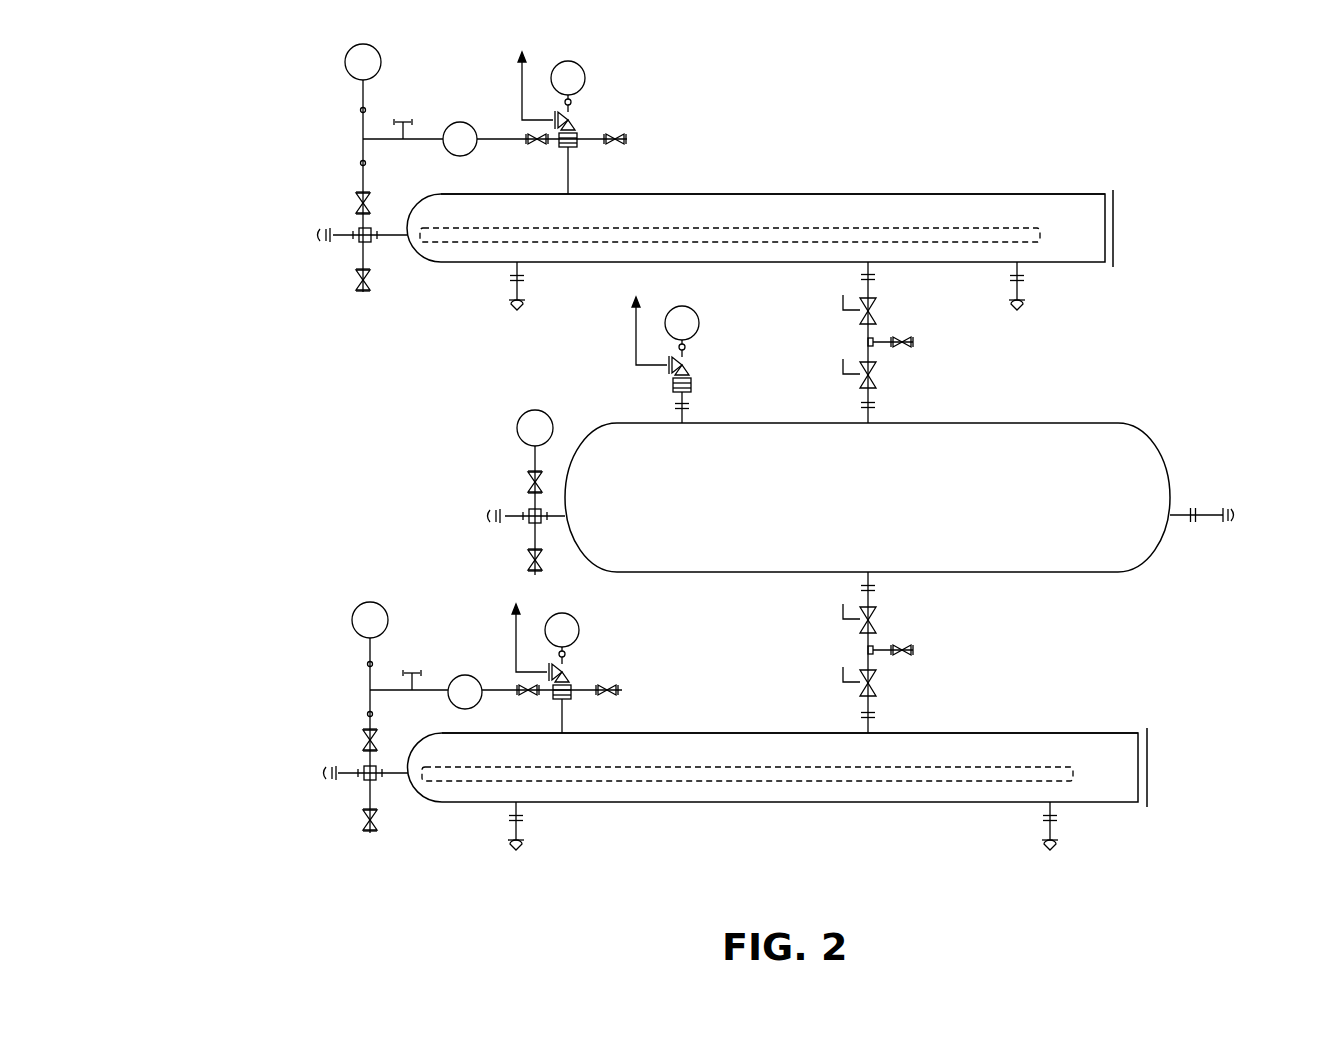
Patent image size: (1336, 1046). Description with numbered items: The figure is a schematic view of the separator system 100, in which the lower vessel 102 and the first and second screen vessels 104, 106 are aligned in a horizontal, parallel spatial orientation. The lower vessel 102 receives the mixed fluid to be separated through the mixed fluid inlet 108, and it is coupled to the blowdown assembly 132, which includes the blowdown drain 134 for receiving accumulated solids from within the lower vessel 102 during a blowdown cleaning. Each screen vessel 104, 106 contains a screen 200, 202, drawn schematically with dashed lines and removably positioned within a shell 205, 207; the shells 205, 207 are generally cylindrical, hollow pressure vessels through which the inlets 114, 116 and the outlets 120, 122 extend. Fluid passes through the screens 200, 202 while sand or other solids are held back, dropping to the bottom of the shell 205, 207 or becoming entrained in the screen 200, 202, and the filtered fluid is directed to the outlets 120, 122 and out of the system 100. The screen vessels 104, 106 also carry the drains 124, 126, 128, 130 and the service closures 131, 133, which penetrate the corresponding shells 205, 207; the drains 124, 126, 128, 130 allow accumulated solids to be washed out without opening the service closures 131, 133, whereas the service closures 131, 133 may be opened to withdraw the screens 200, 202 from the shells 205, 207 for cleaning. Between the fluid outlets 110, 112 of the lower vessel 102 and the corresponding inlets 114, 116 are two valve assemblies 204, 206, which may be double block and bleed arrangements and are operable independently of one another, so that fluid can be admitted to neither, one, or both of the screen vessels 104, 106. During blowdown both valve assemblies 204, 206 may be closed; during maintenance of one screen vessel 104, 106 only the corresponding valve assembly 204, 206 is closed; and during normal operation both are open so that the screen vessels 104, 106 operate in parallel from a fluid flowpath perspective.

The system 100 is at (206, 150).
The lower vessel 102 is at (853, 508).
The first screen vessel 104 is at (996, 194).
The second screen vessel 106 is at (1067, 733).
The mixed fluid inlet 108 is at (518, 508).
The fluid outlet 110 is at (866, 421).
The fluid outlet 112 is at (872, 575).
The inlet 114 is at (873, 270).
The inlet 116 is at (867, 733).
The outlet 120 is at (343, 233).
The outlet 122 is at (358, 768).
The drain 124 is at (513, 268).
The drain 126 is at (1022, 267).
The drain 128 is at (513, 807).
The drain 130 is at (1052, 808).
The service closure 131 is at (1115, 205).
The blowdown assembly 132 is at (1236, 462).
The service closure 133 is at (1152, 753).
The blowdown drain 134 is at (1173, 517).
The screen 200 is at (688, 227).
The screen 202 is at (680, 767).
The valve assembly 204 is at (945, 356).
The shell 205 is at (878, 194).
The valve assembly 206 is at (938, 666).
The shell 207 is at (663, 732).